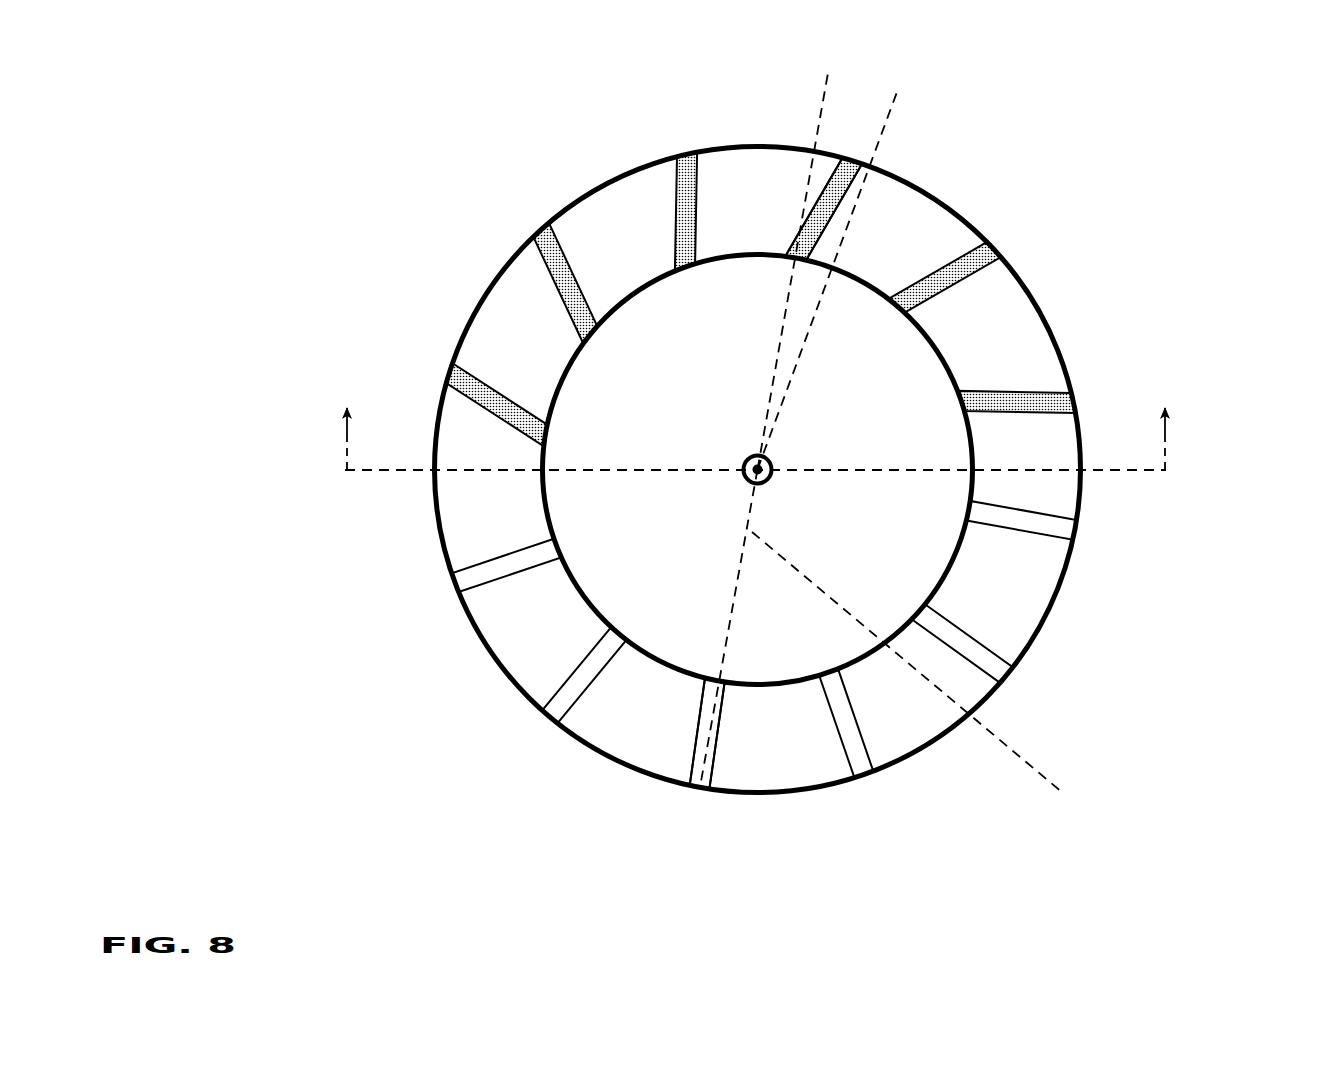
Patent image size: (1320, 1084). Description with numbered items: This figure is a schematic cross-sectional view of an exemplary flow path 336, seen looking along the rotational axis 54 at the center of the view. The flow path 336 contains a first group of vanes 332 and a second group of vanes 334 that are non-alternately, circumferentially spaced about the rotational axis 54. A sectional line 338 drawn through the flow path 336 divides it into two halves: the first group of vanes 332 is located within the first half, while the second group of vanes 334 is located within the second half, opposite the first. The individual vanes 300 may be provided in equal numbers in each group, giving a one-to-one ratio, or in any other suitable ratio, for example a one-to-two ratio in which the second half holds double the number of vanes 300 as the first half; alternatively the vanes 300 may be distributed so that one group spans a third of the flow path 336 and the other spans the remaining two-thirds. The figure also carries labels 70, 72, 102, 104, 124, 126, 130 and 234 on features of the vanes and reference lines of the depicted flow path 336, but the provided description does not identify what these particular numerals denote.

The flow path 336 is at (352, 102).
The rotational axis 54 is at (744, 476).
The vane 70 is at (563, 368).
The vane 72 is at (553, 222).
The inner end of vane 102 is at (805, 258).
The outer end of vane 104 is at (860, 163).
The chord line 124 is at (897, 92).
The radial line 126 is at (820, 122).
The vane body 130 is at (820, 207).
The strut 234 is at (688, 773).
The vanes 300 is at (997, 387).
The first group of vanes 332 is at (815, 237).
The second group of vanes 334 is at (1000, 660).
The sectional line 338 is at (1170, 456).